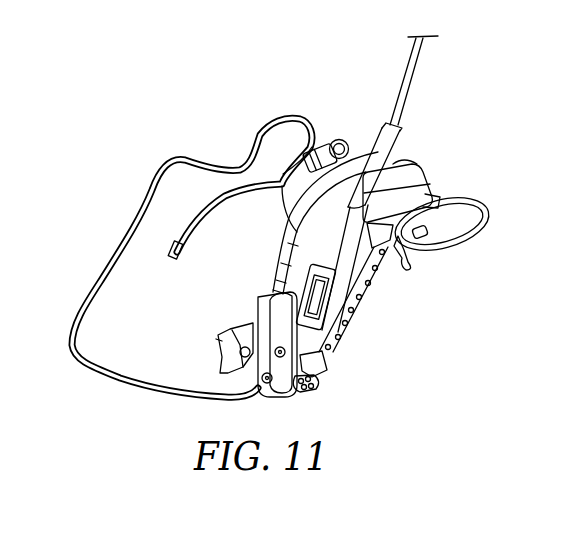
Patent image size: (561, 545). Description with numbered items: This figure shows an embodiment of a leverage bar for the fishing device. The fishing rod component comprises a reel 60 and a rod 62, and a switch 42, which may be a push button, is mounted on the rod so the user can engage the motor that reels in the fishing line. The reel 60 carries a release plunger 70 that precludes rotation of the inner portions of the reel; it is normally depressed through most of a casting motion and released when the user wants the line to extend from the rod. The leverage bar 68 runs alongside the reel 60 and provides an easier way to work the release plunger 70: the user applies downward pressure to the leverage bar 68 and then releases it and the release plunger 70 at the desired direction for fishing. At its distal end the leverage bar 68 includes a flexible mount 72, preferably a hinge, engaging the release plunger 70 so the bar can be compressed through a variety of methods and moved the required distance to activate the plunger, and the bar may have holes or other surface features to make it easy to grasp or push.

The switch 42 is at (310, 297).
The reel 60 is at (417, 188).
The rod 62 is at (410, 75).
The leverage bar 68 is at (367, 293).
The release plunger 70 is at (475, 217).
The flexible mount 72 is at (320, 388).